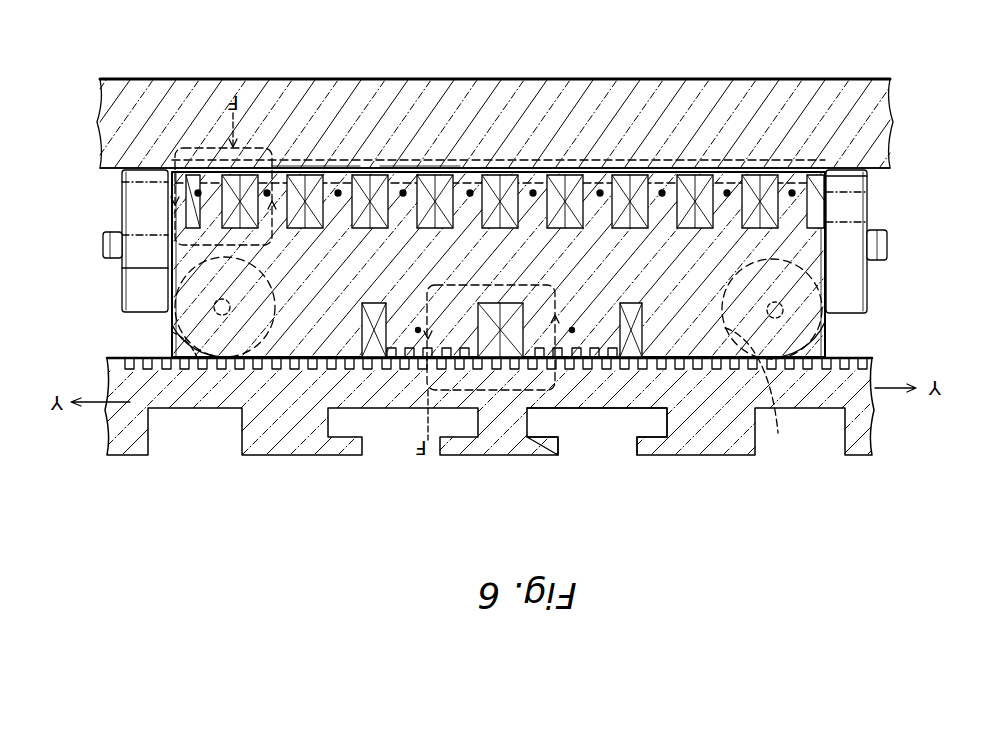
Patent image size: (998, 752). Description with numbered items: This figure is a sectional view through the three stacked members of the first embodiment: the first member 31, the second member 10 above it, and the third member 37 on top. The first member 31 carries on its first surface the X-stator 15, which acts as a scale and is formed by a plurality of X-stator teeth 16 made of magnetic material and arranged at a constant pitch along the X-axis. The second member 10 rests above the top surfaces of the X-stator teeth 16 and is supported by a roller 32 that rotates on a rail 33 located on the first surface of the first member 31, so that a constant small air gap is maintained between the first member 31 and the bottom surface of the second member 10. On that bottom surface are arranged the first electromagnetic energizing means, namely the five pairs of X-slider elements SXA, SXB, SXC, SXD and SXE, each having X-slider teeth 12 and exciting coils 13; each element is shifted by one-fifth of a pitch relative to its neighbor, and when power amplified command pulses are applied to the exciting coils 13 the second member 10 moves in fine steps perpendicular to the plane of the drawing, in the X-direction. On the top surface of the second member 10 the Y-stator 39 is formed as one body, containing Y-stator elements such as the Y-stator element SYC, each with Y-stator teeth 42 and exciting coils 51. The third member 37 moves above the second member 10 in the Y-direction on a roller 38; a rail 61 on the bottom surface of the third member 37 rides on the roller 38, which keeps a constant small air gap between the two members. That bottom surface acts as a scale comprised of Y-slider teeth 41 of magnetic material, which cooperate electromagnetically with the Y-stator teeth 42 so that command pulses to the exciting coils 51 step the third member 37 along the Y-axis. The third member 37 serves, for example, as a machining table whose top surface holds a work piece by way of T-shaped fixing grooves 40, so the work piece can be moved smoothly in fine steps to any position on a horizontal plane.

The second member 10 is at (170, 268).
The X-slider teeth 12 is at (596, 180).
The exciting coils 13 is at (420, 168).
The X-stator 15 is at (313, 165).
The X-stator teeth 16 is at (711, 158).
The first member 31 is at (461, 70).
The roller 32 is at (135, 288).
The rail 33 is at (143, 168).
The third member 37 is at (292, 443).
The roller 38 is at (185, 342).
The Y-stator 39 is at (686, 366).
The T-shaped fixing grooves 40 is at (198, 440).
The Y-slider teeth 41 is at (646, 365).
The Y-stator teeth 42 is at (394, 350).
The exciting coils 51 is at (488, 357).
The rail 61 is at (172, 326).
The X-slider element SXA is at (792, 193).
The X-slider element SXB is at (662, 193).
The X-slider element SXC is at (533, 193).
The X-slider element SXD is at (403, 193).
The X-slider element SXE is at (267, 193).
The Y-stator element SYC is at (418, 333).